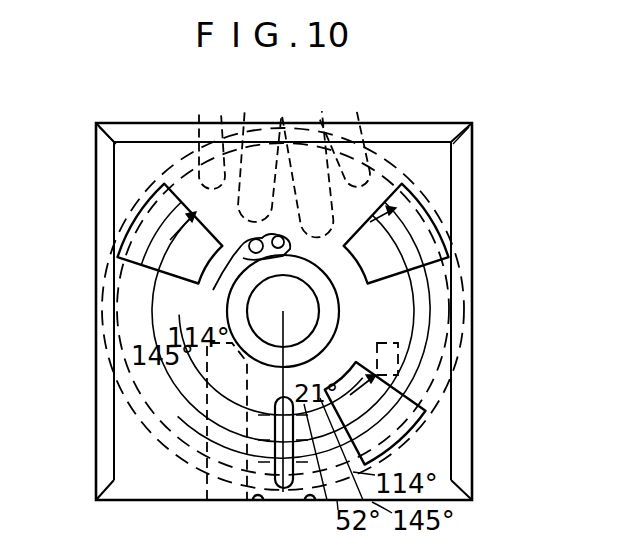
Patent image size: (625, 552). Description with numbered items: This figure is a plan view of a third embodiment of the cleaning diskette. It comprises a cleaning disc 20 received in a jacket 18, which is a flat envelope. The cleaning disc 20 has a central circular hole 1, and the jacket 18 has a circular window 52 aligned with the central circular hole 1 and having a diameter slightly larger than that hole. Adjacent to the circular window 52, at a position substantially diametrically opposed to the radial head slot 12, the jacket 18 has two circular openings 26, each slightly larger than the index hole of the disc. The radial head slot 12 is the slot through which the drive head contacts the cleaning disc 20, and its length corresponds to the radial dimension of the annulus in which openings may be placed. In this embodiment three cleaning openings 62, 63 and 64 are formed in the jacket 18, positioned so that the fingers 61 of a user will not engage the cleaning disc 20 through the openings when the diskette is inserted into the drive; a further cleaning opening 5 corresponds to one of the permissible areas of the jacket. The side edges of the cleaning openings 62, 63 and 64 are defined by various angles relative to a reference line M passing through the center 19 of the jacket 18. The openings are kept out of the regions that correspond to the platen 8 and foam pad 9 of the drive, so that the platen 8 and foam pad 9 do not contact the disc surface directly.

The central circular hole 1 is at (310, 322).
The cleaning opening 5 is at (134, 398).
The platen 8 is at (212, 398).
The foam pad 9 is at (455, 373).
The radial head slot 12 is at (294, 492).
The jacket 18 is at (96, 186).
The center 19 is at (283, 311).
The cleaning disc 20 is at (413, 228).
The circular openings 26 is at (183, 283).
The circular window 52 is at (323, 337).
The fingers 61 is at (238, 168).
The cleaning opening 62 is at (410, 262).
The cleaning opening 63 is at (137, 262).
The cleaning opening 64 is at (382, 443).
The reference line M is at (280, 506).